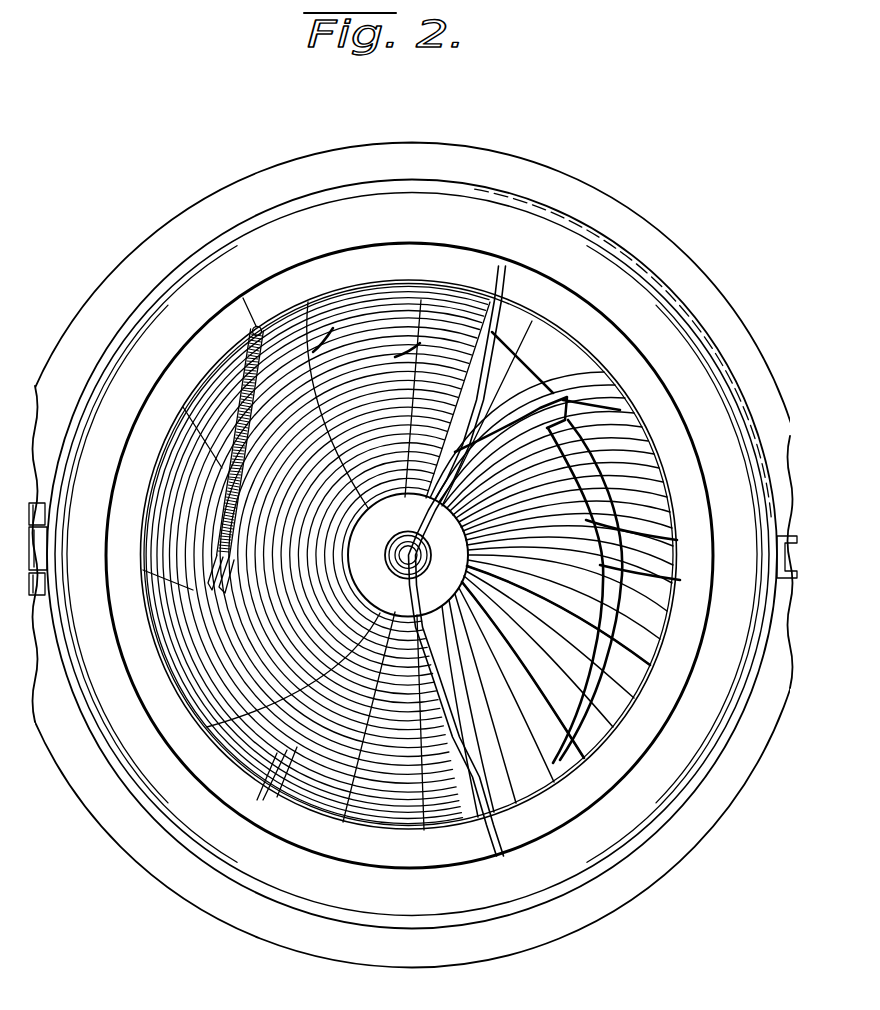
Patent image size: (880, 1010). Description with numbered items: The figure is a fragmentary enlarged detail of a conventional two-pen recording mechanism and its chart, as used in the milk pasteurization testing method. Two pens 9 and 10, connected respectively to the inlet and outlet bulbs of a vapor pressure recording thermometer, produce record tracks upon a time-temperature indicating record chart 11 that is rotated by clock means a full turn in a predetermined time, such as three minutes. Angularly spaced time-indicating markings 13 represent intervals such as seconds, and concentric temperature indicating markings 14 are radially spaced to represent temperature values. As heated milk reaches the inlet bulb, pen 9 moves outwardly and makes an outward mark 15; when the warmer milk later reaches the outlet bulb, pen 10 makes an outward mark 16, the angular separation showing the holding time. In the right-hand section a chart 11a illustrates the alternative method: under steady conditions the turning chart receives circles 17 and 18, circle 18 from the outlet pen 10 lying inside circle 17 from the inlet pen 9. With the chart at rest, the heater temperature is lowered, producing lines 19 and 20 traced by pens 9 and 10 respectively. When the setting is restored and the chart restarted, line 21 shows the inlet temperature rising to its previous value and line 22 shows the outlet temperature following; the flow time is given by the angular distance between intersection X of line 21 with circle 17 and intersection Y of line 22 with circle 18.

The pen 9 is at (240, 385).
The pen 10 is at (218, 506).
The time-temperature indicating record chart 11 is at (190, 680).
The chart 11a is at (600, 710).
The time-indicating markings 13 is at (188, 590).
The concentric temperature indicating markings 14 is at (262, 777).
The outward mark 15 is at (316, 303).
The outward mark 16 is at (421, 300).
The circle 17 is at (505, 308).
The circle 18 is at (540, 345).
The line 19 is at (590, 371).
The line 20 is at (617, 410).
The line 21 is at (635, 442).
The line 22 is at (650, 540).
The intersection X is at (640, 470).
The intersection Y is at (648, 575).